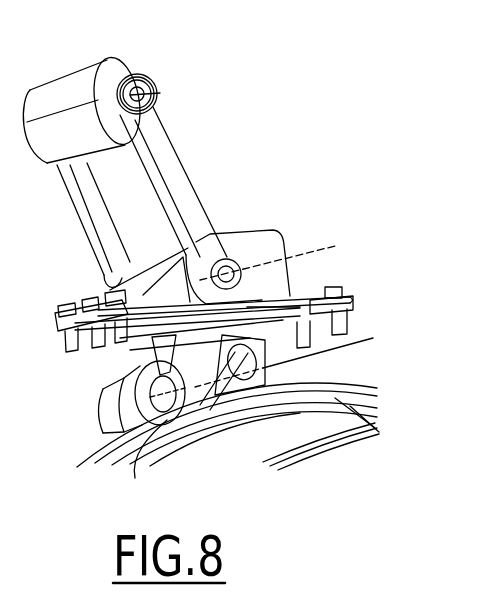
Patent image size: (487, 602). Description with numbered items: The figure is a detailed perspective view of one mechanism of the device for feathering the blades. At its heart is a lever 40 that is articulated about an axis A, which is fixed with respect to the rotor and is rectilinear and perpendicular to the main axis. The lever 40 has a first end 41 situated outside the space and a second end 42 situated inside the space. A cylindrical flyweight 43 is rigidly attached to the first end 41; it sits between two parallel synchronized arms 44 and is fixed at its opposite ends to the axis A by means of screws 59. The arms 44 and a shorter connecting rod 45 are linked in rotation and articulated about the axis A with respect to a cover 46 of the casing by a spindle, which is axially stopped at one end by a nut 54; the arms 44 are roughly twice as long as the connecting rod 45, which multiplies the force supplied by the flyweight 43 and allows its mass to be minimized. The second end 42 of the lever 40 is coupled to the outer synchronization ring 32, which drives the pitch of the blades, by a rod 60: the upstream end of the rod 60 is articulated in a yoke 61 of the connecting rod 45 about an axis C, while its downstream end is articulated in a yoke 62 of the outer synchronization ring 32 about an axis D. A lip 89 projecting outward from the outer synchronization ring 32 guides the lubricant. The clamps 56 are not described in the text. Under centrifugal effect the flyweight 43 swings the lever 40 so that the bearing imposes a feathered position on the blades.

The outer synchronization ring 32 is at (332, 447).
The lever 40 is at (133, 194).
The first end 41 is at (143, 76).
The second end 42 is at (108, 435).
The flyweight 43 is at (62, 90).
The synchronized arms 44 is at (170, 160).
The connecting rod 45 is at (133, 353).
The cover 46 is at (270, 229).
The nut 54 is at (243, 260).
The clamp 56 is at (95, 292).
The screws 59 is at (150, 92).
The rod 60 is at (197, 425).
The yoke of the connecting rod 61 is at (100, 393).
The yoke of the outer synchronization ring 62 is at (235, 395).
The lip 89 is at (332, 348).
The axis A is at (298, 249).
The axis C is at (147, 464).
The axis D is at (330, 372).